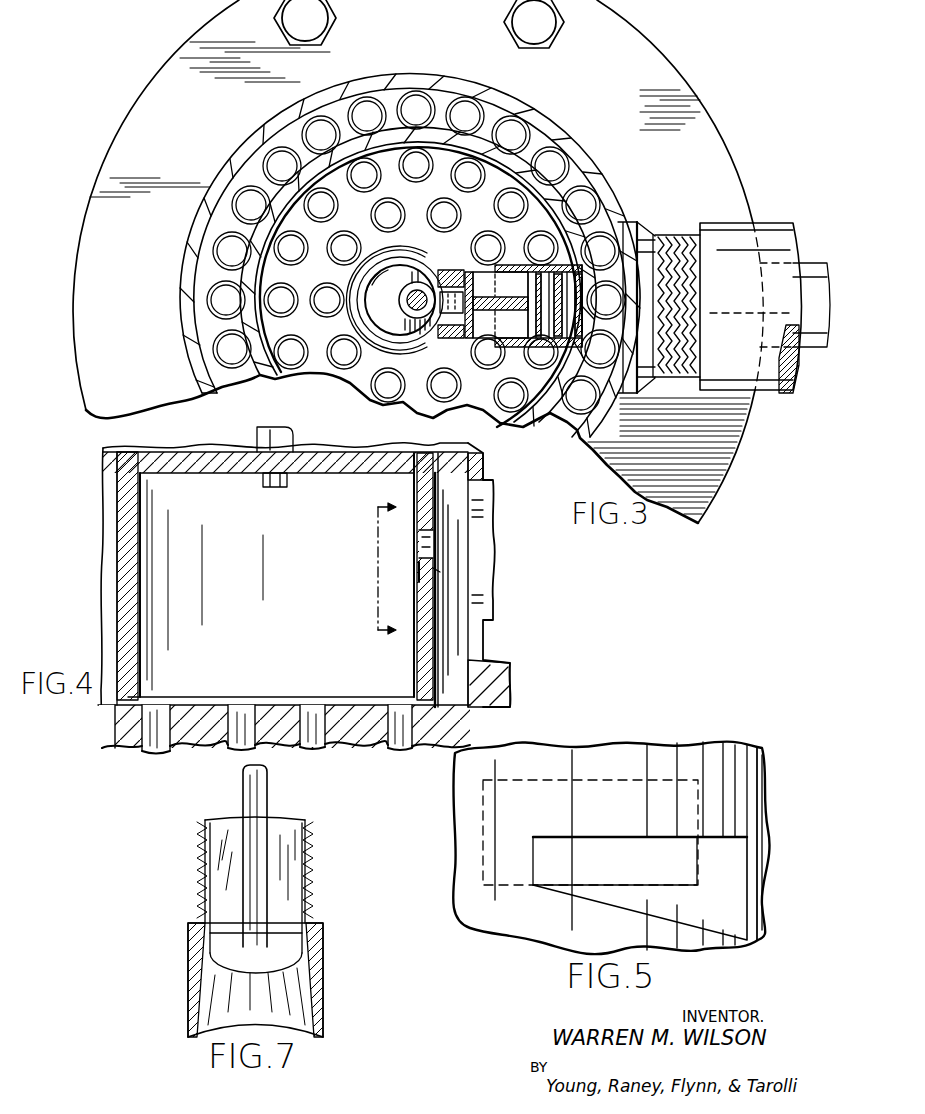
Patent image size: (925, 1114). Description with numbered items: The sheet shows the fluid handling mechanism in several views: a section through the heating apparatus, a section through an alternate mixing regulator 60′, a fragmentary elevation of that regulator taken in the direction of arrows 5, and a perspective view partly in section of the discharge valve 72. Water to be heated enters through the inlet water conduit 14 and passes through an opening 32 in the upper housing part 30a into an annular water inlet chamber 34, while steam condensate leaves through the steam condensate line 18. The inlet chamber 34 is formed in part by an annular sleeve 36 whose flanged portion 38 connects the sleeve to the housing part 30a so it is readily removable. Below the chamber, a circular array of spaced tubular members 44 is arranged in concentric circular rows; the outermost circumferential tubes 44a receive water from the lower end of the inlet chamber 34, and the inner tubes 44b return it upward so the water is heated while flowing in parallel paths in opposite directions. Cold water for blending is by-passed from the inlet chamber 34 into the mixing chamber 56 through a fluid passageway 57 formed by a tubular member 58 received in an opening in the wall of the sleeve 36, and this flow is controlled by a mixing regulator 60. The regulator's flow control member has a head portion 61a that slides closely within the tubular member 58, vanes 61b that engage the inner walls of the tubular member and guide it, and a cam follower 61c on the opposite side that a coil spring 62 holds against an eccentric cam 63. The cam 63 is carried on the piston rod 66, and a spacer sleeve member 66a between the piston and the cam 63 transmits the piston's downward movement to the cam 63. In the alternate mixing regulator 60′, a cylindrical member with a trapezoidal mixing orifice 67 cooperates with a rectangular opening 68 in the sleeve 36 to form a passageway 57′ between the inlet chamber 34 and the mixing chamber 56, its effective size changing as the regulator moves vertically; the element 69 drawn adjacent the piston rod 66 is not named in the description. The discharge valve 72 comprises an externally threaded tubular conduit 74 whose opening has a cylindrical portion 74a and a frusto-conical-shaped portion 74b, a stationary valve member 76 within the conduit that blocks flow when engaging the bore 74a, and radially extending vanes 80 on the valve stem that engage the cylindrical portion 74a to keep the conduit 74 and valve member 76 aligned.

In FIG. 3, the inlet water conduit 14 is at (782, 207).
In FIG. 3, the steam condensate line 18 is at (800, 345).
In FIG. 3, the upper housing part 30a is at (420, 74).
In FIG. 3, the opening 32 is at (628, 222).
In FIG. 3, the annular water inlet chamber 34 is at (530, 154).
In FIG. 4, the annular water inlet chamber 34 is at (462, 638).
In FIG. 3, the annular sleeve 36 is at (316, 160).
In FIG. 4, the annular sleeve 36 is at (118, 560).
In FIG. 5, the annular sleeve 36 is at (730, 900).
In FIG. 4, the flanged portion 38 is at (104, 460).
In FIG. 3, the tubular members 44 is at (540, 235).
In FIG. 4, the tubular members 44 is at (310, 700).
In FIG. 3, the outermost circumferential tubes 44a is at (571, 177).
In FIG. 3, the inner tubes 44b is at (440, 214).
In FIG. 4, the mixing chamber 56 is at (304, 612).
In FIG. 3, the fluid passageway 57 is at (583, 285).
In FIG. 4, the passageway 57′ is at (418, 573).
In FIG. 5, the passageway 57′ is at (603, 862).
In FIG. 3, the tubular member 58 is at (522, 345).
In FIG. 3, the mixing regulator 60 is at (468, 232).
In FIG. 4, the mixing regulator 60′ is at (193, 474).
In FIG. 5, the mixing regulator 60′ is at (760, 786).
In FIG. 3, the head portion 61a is at (470, 339).
In FIG. 3, the vanes 61b is at (518, 323).
In FIG. 3, the cam follower 61c is at (452, 282).
In FIG. 3, the coil spring 62 is at (572, 317).
In FIG. 3, the eccentric cam 63 is at (430, 256).
In FIG. 3, the piston rod 66 is at (418, 310).
In FIG. 4, the piston rod 66 is at (294, 437).
In FIG. 3, the spacer sleeve member 66a is at (412, 296).
In FIG. 4, the mixing orifice 67 is at (420, 596).
In FIG. 5, the mixing orifice 67 is at (644, 840).
In FIG. 4, the rectangular opening 68 is at (428, 580).
In FIG. 5, the rectangular opening 68 is at (553, 883).
In FIG. 4, the nut 69 is at (322, 480).
In FIG. 7, the valve 72 is at (184, 873).
In FIG. 7, the tubular conduit 74 is at (320, 940).
In FIG. 7, the cylindrical portion 74a is at (300, 870).
In FIG. 7, the frusto-conical-shaped portion 74b is at (318, 986).
In FIG. 7, the stationary valve member 76 is at (258, 966).
In FIG. 7, the guide members or vanes 80 is at (244, 804).
In FIG. 4, the arrows 5— 5 is at (391, 568).